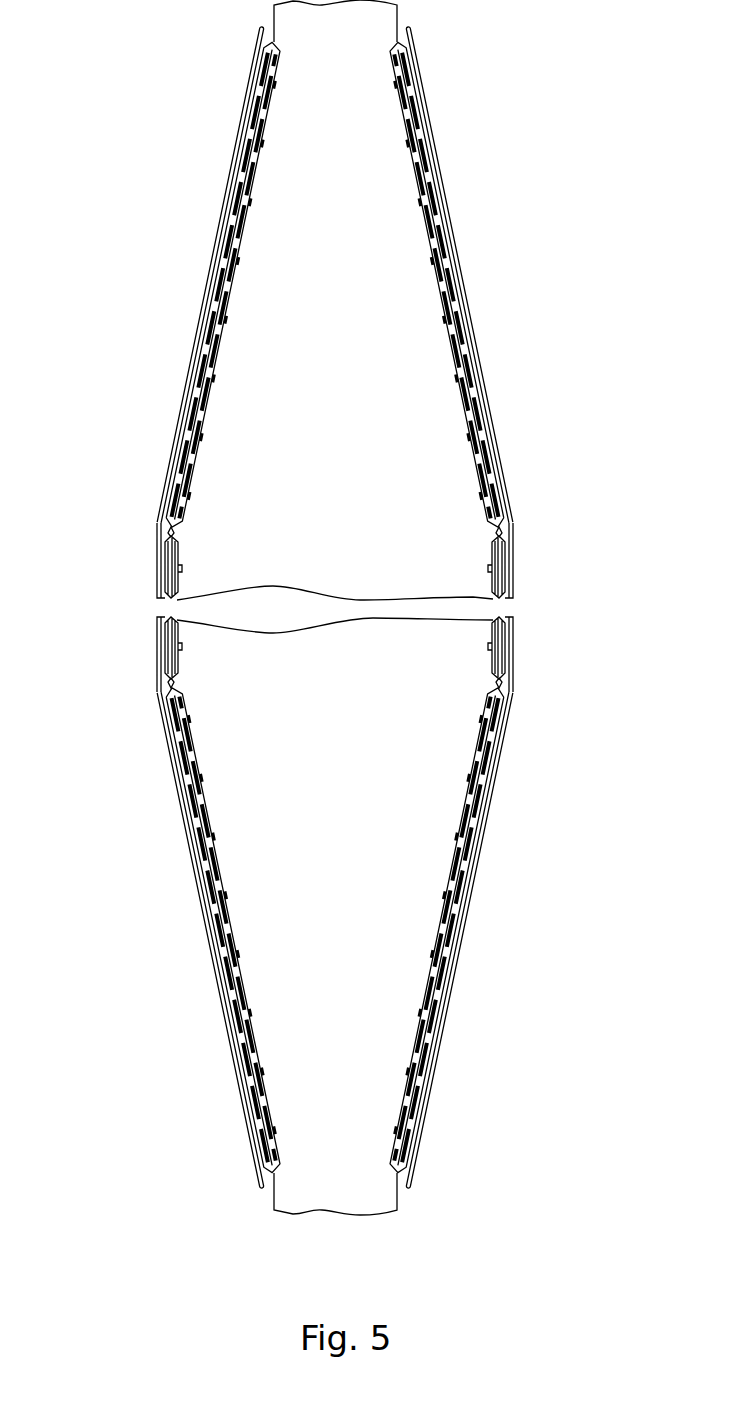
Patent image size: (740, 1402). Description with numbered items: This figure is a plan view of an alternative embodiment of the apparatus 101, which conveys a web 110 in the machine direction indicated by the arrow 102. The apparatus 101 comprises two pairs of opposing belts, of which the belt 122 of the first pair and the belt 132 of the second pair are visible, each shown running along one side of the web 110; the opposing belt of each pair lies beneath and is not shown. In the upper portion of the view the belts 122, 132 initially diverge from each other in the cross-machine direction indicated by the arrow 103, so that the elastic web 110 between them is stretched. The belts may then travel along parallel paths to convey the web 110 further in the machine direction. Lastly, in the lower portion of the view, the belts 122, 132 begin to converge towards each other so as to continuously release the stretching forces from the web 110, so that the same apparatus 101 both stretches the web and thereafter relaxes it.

The apparatus 101 is at (553, 550).
The web 110 is at (370, 558).
The belt 122 is at (480, 370).
The belt 132 is at (201, 330).
The arrow 102 is at (342, 949).
The arrow 103 is at (388, 855).